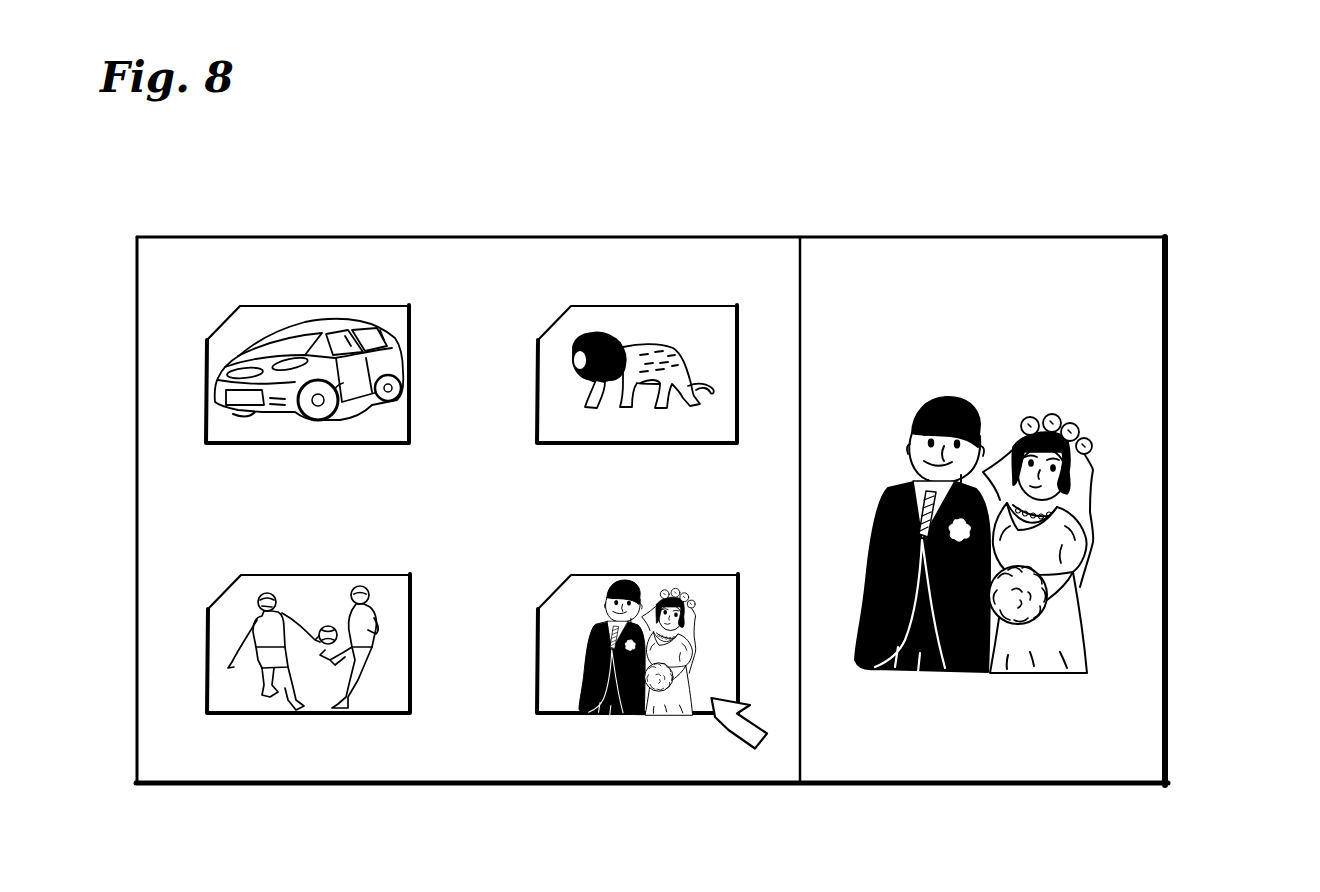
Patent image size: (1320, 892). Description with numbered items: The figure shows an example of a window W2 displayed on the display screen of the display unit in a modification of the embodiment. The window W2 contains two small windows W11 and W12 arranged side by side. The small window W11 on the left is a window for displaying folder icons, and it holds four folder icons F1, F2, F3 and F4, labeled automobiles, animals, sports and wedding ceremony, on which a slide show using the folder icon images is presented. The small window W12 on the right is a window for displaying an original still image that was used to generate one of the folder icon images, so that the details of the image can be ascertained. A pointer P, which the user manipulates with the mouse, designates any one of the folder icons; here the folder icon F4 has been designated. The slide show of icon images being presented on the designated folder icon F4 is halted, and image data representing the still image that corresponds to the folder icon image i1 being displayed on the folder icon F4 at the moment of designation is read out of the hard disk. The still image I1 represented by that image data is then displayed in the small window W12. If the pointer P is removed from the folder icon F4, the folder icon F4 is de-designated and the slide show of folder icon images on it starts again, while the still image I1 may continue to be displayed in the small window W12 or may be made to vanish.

The window W2 is at (933, 237).
The small window W11 is at (682, 250).
The small window W12 is at (1150, 288).
The folder icon F1 is at (410, 340).
The folder icon F2 is at (703, 304).
The folder icon F3 is at (380, 573).
The folder icon F4 is at (618, 641).
The folder icon image i1 is at (552, 688).
The still image I1 is at (1118, 409).
The pointer P is at (753, 708).